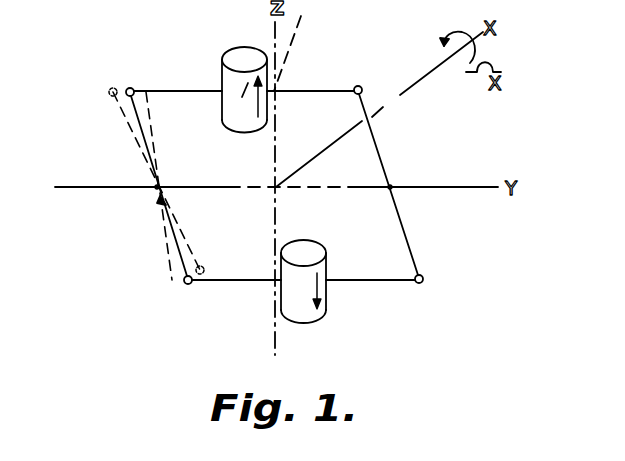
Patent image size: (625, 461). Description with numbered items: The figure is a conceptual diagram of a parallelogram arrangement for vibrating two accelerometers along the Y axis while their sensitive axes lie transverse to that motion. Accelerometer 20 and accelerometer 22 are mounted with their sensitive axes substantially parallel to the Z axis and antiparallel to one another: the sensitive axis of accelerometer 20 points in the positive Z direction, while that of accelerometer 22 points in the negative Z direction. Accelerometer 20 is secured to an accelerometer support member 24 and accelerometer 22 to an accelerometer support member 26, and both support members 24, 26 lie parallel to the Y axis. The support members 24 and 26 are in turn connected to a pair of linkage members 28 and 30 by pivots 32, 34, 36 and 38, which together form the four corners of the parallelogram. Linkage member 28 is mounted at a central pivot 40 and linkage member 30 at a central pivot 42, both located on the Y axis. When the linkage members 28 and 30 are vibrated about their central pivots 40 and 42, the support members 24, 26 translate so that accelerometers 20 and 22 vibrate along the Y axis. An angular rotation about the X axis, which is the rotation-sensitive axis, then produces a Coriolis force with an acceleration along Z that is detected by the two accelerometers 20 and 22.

The accelerometer 20 is at (235, 52).
The accelerometer 22 is at (316, 322).
The accelerometer support member 24 is at (172, 91).
The accelerometer support member 26 is at (375, 282).
The linkage member 28 is at (143, 140).
The linkage member 30 is at (407, 236).
The pivot 32 is at (133, 88).
The pivot 34 is at (359, 86).
The pivot 36 is at (186, 285).
The pivot 38 is at (424, 278).
The central pivot 40 is at (157, 190).
The central pivot 42 is at (392, 186).